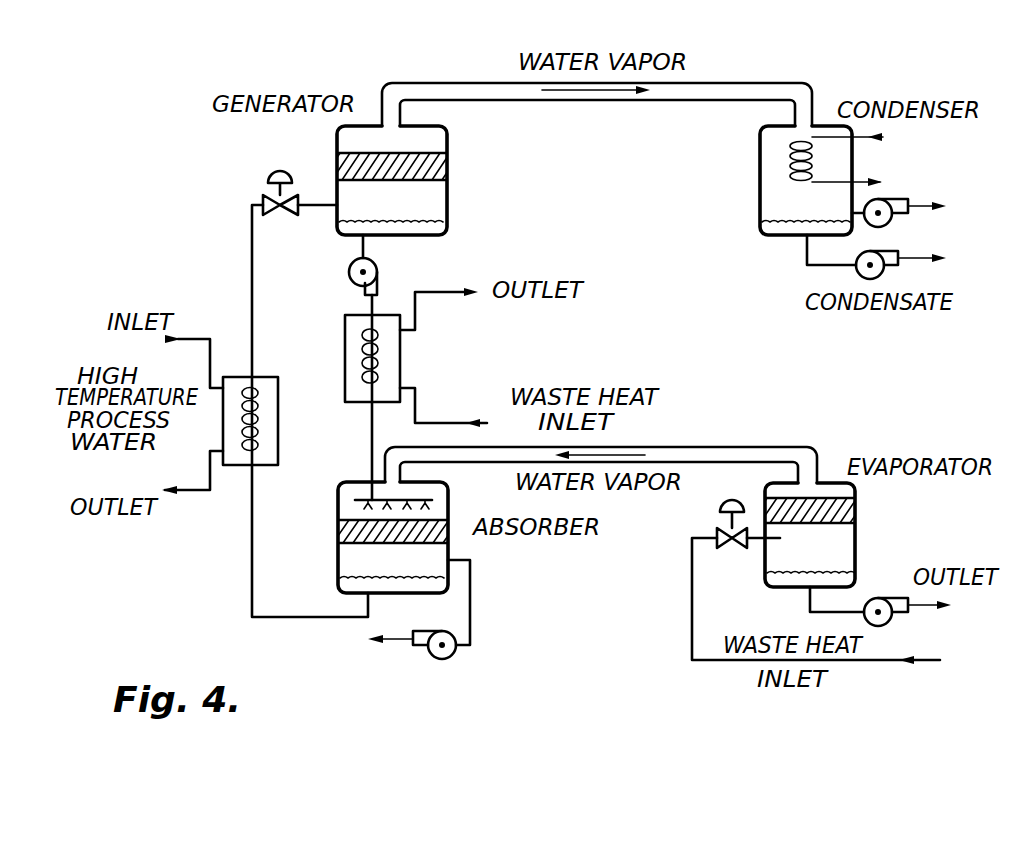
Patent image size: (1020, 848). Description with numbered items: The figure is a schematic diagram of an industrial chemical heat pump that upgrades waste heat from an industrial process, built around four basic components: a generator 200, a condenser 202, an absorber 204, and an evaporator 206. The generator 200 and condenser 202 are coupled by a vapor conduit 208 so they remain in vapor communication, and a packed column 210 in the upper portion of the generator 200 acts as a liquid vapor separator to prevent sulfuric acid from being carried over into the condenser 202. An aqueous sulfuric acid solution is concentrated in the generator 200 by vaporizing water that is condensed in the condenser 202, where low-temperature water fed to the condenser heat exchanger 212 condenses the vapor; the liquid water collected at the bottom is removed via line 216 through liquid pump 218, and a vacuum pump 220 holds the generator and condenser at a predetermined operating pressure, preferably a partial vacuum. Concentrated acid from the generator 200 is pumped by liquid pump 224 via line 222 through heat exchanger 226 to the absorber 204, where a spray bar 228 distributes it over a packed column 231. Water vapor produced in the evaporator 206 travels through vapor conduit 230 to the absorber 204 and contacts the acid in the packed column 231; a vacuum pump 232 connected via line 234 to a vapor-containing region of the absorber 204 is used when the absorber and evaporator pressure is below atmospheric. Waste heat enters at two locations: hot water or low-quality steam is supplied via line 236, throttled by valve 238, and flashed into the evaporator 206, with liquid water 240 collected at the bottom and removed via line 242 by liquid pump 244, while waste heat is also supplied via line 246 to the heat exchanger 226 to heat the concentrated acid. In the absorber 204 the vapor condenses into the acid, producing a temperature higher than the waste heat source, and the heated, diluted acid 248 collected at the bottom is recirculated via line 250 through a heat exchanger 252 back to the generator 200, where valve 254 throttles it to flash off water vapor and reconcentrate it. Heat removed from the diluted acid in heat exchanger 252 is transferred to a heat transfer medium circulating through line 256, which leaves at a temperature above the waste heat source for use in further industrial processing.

The generator 200 is at (447, 198).
The condenser 202 is at (760, 178).
The absorber 204 is at (338, 556).
The evaporator 206 is at (855, 525).
The vapor conduit 208 is at (728, 82).
The packed column 210 is at (447, 166).
The condenser heat exchanger 212 is at (790, 149).
The line 216 is at (807, 252).
The liquid pump 218 is at (895, 252).
The vacuum pump 220 is at (906, 198).
The line 222 is at (366, 241).
The liquid pump 224 is at (377, 270).
The heat exchanger 226 is at (345, 338).
The spray bar 228 is at (360, 498).
The vapor conduit 230 is at (713, 447).
The packed column 231 is at (338, 528).
The vacuum pump 232 is at (455, 660).
The line 234 is at (470, 597).
The line 236 is at (692, 618).
The valve 238 is at (726, 547).
The liquid water 240 is at (840, 568).
The line 242 is at (810, 605).
The liquid pump 244 is at (890, 625).
The line 246 is at (415, 400).
The diluted acid 248 is at (340, 578).
The line 250 is at (252, 580).
The heat exchanger 252 is at (278, 425).
The valve 254 is at (283, 212).
The line 256 is at (210, 352).